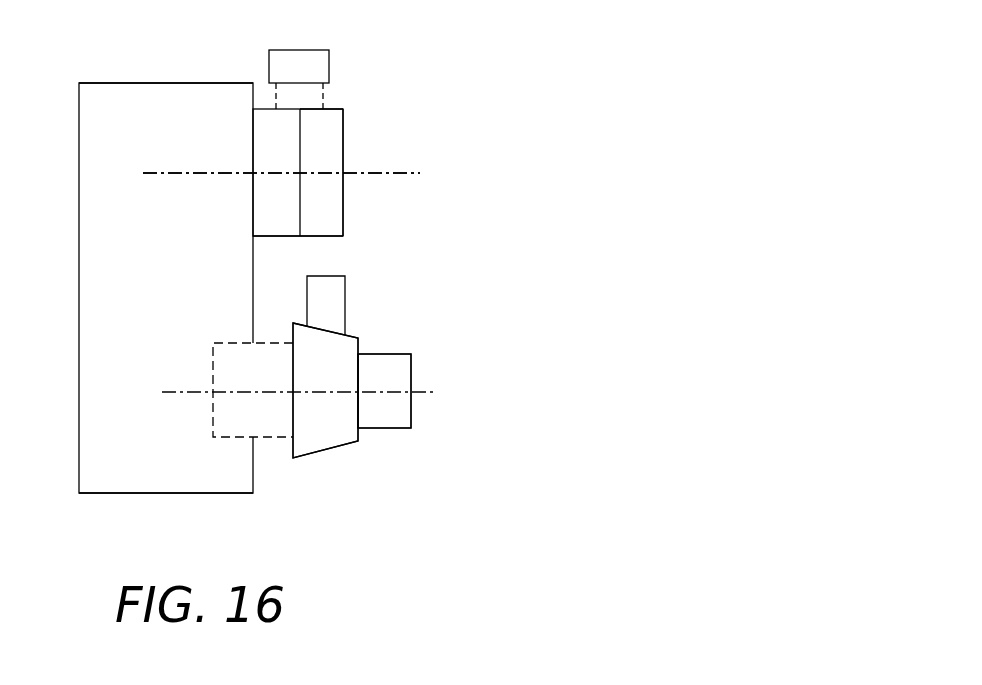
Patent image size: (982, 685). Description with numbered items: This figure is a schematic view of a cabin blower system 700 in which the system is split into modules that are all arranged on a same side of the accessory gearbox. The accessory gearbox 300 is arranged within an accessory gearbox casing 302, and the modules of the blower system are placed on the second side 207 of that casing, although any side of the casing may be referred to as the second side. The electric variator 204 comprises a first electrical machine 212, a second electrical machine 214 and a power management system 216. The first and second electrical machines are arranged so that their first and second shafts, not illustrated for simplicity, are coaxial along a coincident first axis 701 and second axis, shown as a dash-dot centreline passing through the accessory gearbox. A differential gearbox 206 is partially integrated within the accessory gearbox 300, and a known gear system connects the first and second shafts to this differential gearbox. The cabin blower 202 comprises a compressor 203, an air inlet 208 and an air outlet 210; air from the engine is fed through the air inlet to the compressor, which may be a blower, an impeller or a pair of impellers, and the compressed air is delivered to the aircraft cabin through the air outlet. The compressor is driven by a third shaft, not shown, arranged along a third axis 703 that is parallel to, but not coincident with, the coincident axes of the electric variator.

The cabin blower system 700 is at (489, 34).
The accessory gearbox 300 is at (182, 129).
The accessory gearbox casing 302 is at (165, 83).
The electric variator 204 is at (379, 117).
The second electrical machine 214 is at (329, 204).
The first electrical machine 212 is at (278, 224).
The power management system 216 is at (306, 60).
The first axis 701 is at (410, 172).
The air outlet 210 is at (331, 293).
The cabin blower 202 is at (380, 334).
The compressor 203 is at (328, 433).
The air inlet 208 is at (399, 408).
The differential gearbox 206 is at (270, 378).
The third axis 703 is at (426, 391).
The second side 207 is at (253, 478).